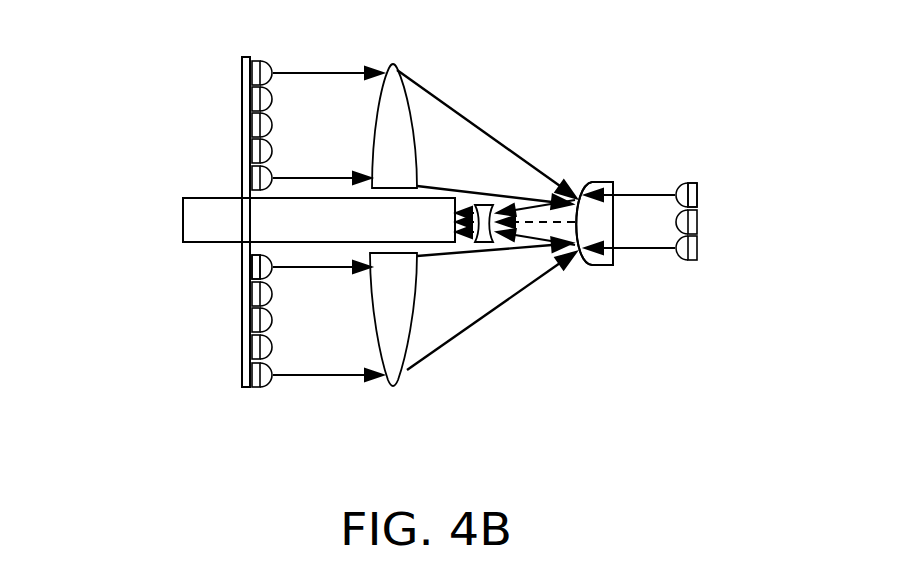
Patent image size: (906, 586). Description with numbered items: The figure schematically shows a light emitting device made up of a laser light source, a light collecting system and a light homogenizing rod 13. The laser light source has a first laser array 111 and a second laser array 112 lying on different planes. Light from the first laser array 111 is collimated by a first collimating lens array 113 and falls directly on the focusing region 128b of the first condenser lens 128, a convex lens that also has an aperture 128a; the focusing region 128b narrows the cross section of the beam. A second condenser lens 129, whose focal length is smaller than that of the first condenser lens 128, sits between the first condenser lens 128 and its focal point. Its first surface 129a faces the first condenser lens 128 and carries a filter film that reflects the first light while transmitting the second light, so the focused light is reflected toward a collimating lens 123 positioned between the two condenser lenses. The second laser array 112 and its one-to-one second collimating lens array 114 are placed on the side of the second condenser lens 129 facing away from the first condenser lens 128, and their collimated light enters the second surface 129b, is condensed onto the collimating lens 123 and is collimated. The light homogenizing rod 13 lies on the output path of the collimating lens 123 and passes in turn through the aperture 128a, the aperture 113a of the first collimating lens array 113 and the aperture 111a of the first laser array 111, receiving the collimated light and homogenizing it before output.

The light homogenizing rod 13 is at (197, 198).
The first laser array 111 is at (260, 388).
The aperture of the first laser array 111a is at (247, 248).
The first collimating lens array 113 is at (270, 388).
The aperture of the first collimating lens array 113a is at (267, 250).
The first condenser lens 128 is at (398, 70).
The aperture 128a is at (416, 194).
The focusing region 128b is at (403, 373).
The collimating lens 123 is at (488, 205).
The second condenser lens 129 is at (600, 192).
The first surface 129a is at (580, 258).
The second surface 129b is at (615, 256).
The second laser array 112 is at (698, 211).
The second collimating lens array 114 is at (673, 183).